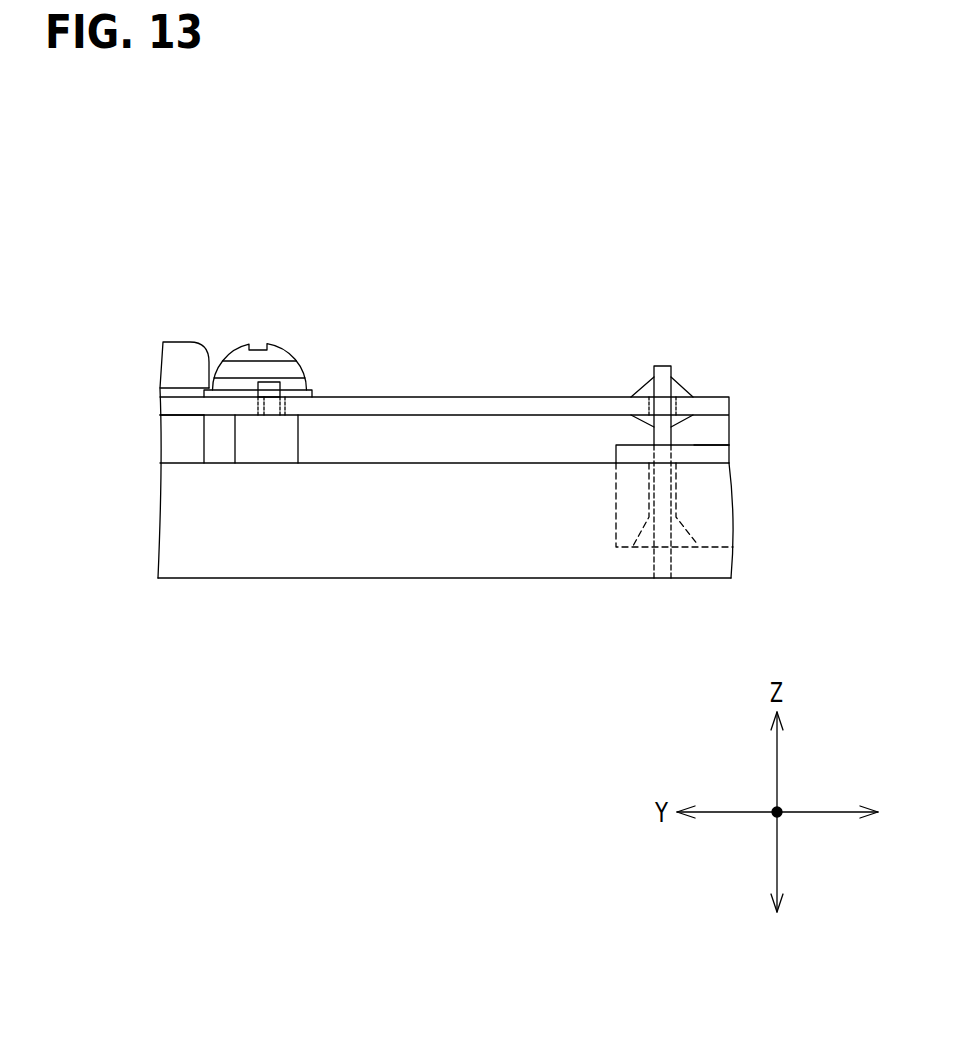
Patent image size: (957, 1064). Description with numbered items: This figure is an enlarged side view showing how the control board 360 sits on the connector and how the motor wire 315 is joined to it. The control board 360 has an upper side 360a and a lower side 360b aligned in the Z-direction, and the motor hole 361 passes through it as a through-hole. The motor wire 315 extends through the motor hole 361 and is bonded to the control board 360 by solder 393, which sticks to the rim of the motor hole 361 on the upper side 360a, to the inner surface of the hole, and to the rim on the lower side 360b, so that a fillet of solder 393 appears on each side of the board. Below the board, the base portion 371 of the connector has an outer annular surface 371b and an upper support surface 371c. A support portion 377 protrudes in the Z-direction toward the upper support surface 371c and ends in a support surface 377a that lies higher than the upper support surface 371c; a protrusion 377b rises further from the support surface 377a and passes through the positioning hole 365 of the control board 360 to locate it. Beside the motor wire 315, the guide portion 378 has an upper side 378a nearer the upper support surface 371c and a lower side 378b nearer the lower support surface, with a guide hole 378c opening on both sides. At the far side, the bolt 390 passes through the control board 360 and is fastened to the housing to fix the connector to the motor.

The motor wire 315 is at (661, 366).
The control board 360 is at (730, 407).
The upper side 360a is at (173, 396).
The lower side 360b is at (185, 416).
The motor hole 361 is at (658, 402).
The positioning hole 365 is at (262, 383).
The base portion 371 is at (735, 497).
The outer annular surface 371b is at (465, 560).
The upper support surface 371c is at (218, 463).
The support portion 377 is at (300, 447).
The support surface 377a is at (294, 411).
The protrusion 377b is at (265, 408).
The guide portion 378 is at (724, 456).
The upper side 378a is at (700, 445).
The lower side 378b is at (715, 547).
The guide hole 378c is at (683, 528).
The bolt 390 is at (175, 342).
The solder 393 is at (686, 389).